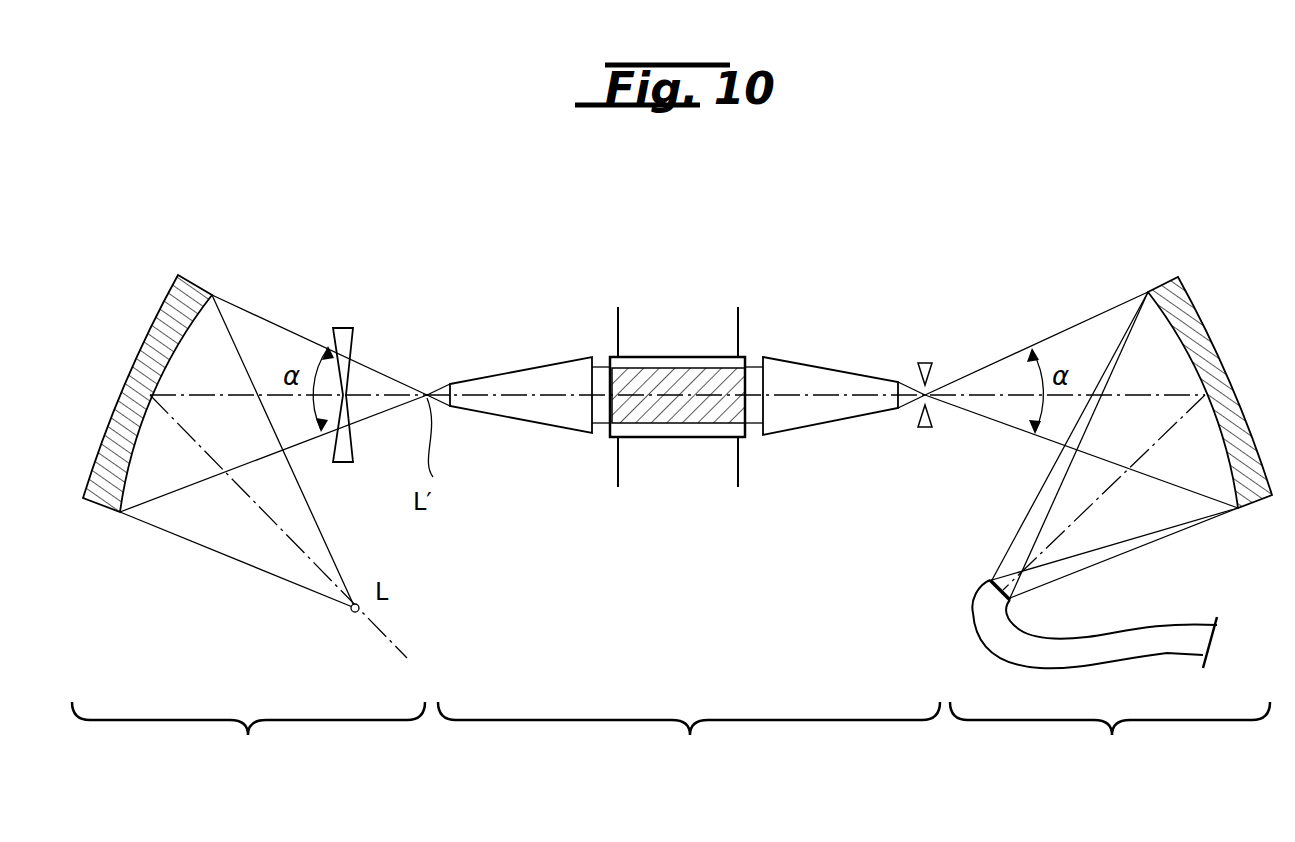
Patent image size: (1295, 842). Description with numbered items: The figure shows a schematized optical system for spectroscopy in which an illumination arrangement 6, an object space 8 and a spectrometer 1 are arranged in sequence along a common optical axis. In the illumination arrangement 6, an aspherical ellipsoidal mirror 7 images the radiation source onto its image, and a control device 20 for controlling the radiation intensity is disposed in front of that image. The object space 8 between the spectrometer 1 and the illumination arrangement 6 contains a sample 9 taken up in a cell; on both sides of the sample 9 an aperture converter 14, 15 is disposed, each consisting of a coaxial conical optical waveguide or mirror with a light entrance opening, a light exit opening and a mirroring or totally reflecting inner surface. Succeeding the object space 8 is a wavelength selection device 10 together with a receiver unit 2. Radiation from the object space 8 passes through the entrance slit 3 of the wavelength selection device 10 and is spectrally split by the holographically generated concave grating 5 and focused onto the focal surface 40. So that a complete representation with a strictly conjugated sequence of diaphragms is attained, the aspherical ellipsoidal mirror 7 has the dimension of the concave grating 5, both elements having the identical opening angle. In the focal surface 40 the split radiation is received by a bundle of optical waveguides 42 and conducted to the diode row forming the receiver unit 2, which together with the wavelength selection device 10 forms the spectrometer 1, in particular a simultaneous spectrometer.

The spectrometer 1 is at (1110, 740).
The receiver unit 2 is at (1227, 620).
The entrance slit 3 is at (928, 377).
The holographically generated concave grating 5 is at (1240, 415).
The illumination arrangement 6 is at (248, 740).
The aspherical ellipsoidal mirror 7 is at (115, 432).
The object space 8 is at (689, 740).
The sample 9 is at (673, 373).
The wavelength selection device 10 is at (922, 536).
The aperture converter 14 is at (532, 410).
The aperture converter 15 is at (862, 407).
The control device 20 is at (353, 348).
The focal surface 40 is at (987, 578).
The bundle of optical waveguides 42 is at (980, 638).